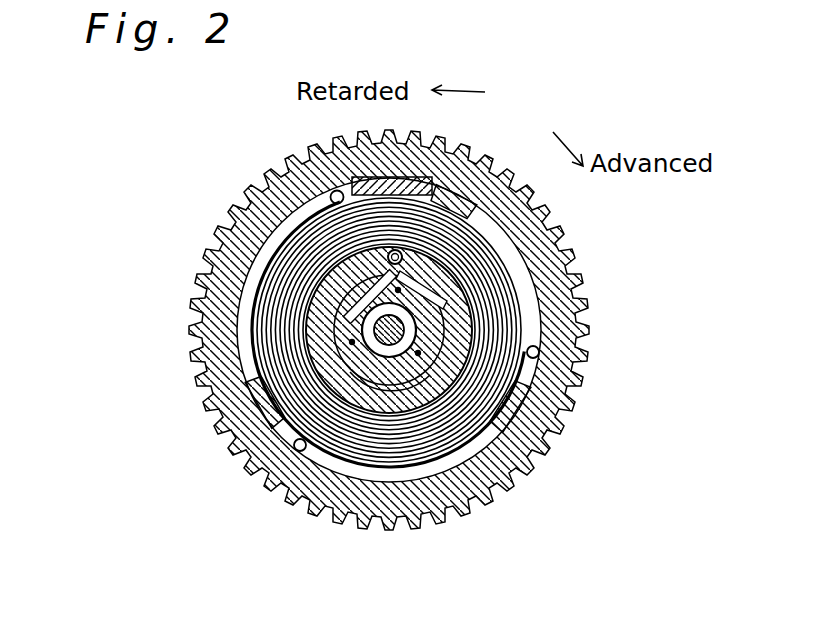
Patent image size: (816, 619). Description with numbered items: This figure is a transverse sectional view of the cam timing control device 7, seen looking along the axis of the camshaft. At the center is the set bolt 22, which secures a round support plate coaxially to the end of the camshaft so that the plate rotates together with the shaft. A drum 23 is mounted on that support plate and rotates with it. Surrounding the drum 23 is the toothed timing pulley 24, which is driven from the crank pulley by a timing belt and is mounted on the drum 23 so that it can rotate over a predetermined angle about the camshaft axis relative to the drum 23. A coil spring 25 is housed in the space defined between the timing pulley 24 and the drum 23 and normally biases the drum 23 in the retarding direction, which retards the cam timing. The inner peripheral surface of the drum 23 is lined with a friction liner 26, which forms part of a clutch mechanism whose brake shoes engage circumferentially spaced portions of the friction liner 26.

The cam timing control device 7 is at (653, 226).
The set bolt 22 is at (400, 322).
The drum 23 is at (388, 377).
The timing pulley 24 is at (215, 248).
The coil spring 25 is at (262, 297).
The friction liner 26 is at (465, 340).